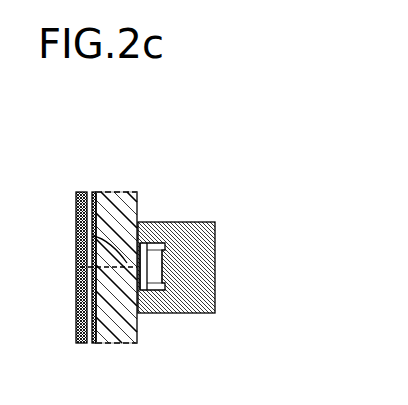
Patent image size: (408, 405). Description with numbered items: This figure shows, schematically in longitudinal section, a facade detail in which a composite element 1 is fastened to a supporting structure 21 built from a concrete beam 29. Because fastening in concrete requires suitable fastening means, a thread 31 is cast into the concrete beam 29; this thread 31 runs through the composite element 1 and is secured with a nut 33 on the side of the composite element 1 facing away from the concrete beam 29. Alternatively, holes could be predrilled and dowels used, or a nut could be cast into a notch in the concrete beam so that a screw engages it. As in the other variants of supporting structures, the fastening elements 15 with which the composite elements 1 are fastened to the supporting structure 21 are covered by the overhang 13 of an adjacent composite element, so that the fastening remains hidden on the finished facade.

The composite element 1 is at (121, 193).
The overhang 13 is at (75, 213).
The fastening element 15 is at (80, 266).
The supporting structure 21 is at (210, 218).
The concrete beam 29 is at (195, 251).
The thread 31 is at (93, 236).
The nut 33 is at (165, 287).